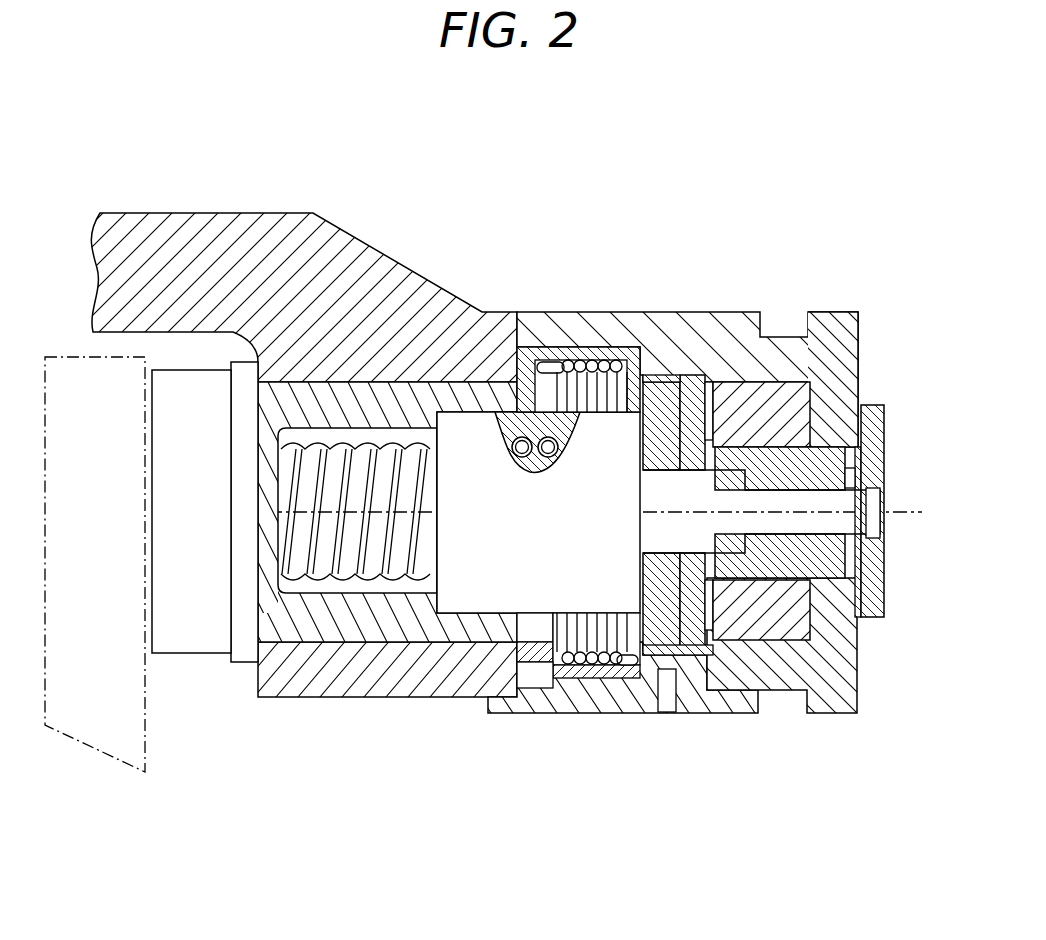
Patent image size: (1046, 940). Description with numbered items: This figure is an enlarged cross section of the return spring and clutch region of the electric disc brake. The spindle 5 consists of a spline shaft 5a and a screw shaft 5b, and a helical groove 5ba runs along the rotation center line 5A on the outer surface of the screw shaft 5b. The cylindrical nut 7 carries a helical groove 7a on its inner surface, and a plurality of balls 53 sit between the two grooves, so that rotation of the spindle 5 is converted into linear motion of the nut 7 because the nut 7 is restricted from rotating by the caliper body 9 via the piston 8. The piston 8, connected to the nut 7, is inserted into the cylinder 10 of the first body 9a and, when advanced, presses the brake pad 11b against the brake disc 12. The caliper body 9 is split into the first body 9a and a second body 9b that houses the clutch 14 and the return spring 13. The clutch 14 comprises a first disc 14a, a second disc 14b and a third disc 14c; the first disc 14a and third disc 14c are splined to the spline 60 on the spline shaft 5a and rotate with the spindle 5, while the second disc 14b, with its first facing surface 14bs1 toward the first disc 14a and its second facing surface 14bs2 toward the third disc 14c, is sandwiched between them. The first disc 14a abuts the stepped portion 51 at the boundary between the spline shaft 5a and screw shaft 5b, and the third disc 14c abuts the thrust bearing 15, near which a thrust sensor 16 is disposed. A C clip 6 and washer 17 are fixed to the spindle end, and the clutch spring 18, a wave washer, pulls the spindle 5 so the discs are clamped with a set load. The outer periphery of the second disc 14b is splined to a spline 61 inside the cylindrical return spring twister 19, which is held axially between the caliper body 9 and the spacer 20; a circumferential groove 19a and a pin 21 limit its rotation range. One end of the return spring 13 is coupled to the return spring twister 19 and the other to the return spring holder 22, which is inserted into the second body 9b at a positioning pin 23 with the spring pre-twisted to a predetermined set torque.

The spindle 5 is at (551, 577).
The spline shaft 5a is at (800, 650).
The screw shaft 5b is at (400, 550).
The helical groove 5ba is at (385, 457).
The rotation center line 5A is at (912, 514).
The C clip 6 is at (885, 478).
The nut 7 is at (517, 391).
The helical groove 7a is at (512, 432).
The piston 8 is at (341, 353).
The caliper body 9 is at (424, 480).
The first body 9a is at (165, 222).
The second body 9b is at (580, 715).
The cylinder 10 is at (270, 682).
The brake pad 11b is at (196, 645).
The brake disc 12 is at (88, 740).
The return spring 13 is at (578, 314).
The clutch 14 is at (690, 487).
The first disc 14a is at (650, 378).
The second disc 14b is at (672, 378).
The third disc 14c is at (706, 380).
The first facing surface 14bs1 is at (662, 660).
The second facing surface 14bs2 is at (685, 652).
The thrust bearing 15 is at (740, 388).
The thrust sensor 16 is at (772, 385).
The washer 17 is at (885, 460).
The clutch spring 18 is at (885, 420).
The return spring twister 19 is at (742, 660).
The groove 19a is at (700, 662).
The spacer 20 is at (600, 672).
The pin 21 is at (662, 700).
The return spring holder 22 is at (558, 362).
The positioning pin 23 is at (538, 683).
The stepped portion 51 is at (658, 650).
The ball 53 is at (545, 432).
The spline 60 is at (722, 462).
The spline 61 is at (702, 440).